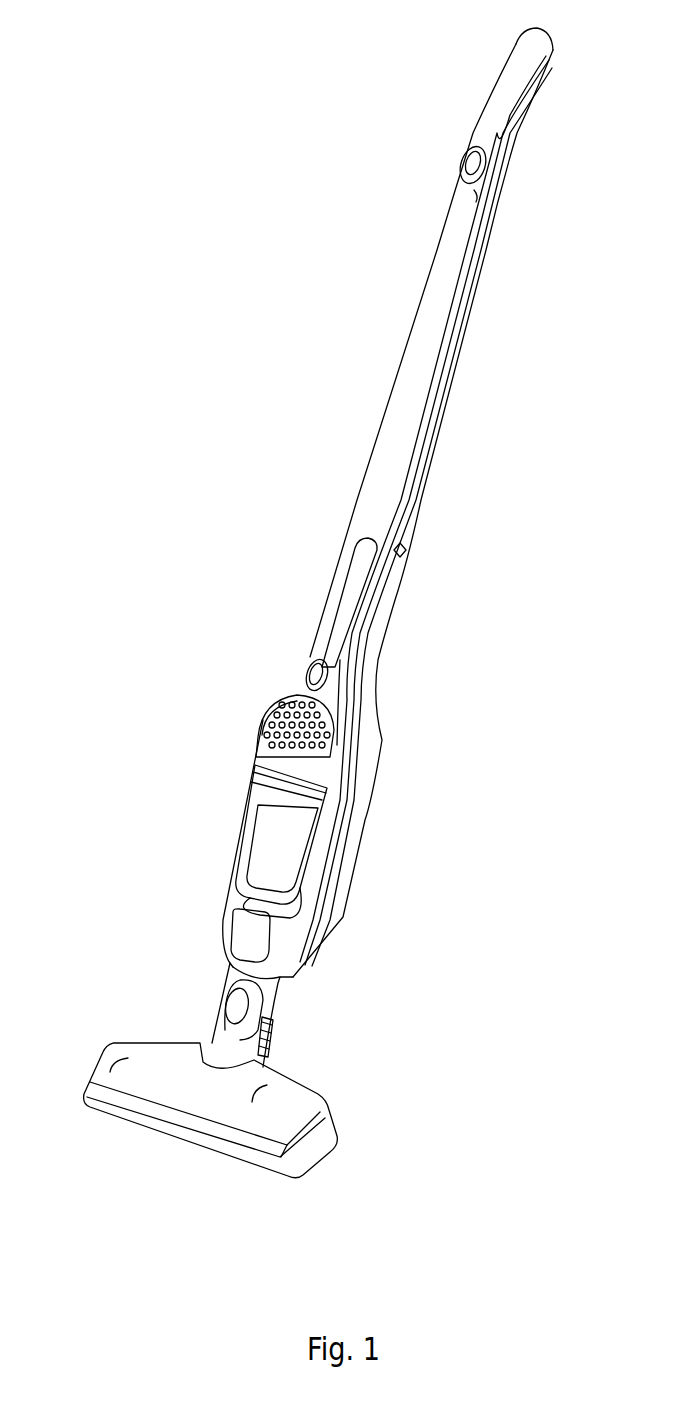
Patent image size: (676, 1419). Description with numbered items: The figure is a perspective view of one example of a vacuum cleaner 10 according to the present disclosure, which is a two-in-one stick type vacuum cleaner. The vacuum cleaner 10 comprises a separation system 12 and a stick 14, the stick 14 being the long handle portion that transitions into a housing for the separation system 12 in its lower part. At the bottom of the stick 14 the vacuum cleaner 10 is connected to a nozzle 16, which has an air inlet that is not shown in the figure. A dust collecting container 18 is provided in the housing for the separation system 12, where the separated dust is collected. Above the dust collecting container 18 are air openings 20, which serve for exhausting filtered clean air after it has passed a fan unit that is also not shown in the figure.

The vacuum cleaner 10 is at (76, 76).
The separation system 12 is at (268, 815).
The stick 14 is at (377, 482).
The nozzle 16 is at (157, 1057).
The dust collecting container 18 is at (265, 865).
The air openings 20 is at (288, 720).